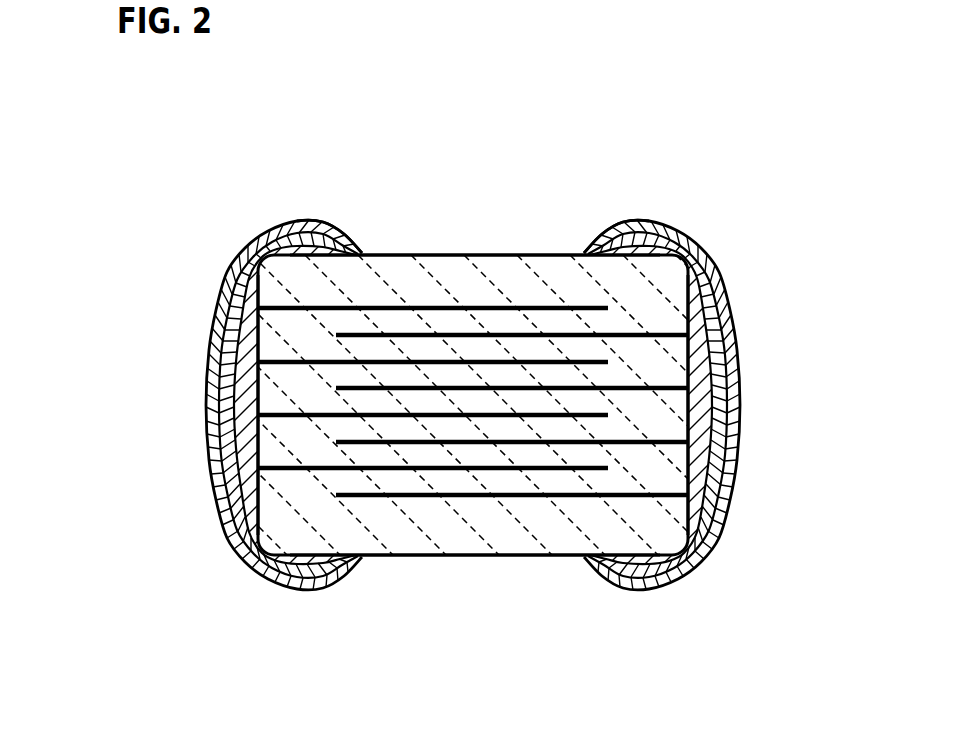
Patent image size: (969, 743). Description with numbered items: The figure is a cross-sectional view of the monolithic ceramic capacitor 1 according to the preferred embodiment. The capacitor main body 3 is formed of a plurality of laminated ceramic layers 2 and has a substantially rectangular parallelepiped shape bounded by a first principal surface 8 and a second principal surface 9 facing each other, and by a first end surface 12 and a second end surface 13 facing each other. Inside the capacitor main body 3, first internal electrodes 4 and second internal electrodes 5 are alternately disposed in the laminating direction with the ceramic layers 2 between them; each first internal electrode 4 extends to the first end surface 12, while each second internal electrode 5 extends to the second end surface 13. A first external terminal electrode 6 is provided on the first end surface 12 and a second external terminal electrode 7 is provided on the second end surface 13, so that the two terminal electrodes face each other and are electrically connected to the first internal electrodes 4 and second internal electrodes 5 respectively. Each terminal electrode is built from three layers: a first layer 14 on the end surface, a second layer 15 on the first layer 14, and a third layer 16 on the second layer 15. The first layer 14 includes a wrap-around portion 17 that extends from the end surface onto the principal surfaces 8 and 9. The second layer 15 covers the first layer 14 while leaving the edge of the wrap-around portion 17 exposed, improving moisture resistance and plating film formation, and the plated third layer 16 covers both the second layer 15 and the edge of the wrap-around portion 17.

The monolithic ceramic capacitor 1 is at (160, 149).
The ceramic layers 2 is at (450, 455).
The capacitor main body 3 is at (560, 244).
The first internal electrode 4 is at (450, 360).
The second internal electrode 5 is at (551, 448).
The first external terminal electrode 6 is at (100, 303).
The second external terminal electrode 7 is at (827, 283).
The first principal surface 8 is at (468, 255).
The second principal surface 9 is at (373, 557).
The first end surface 12 is at (247, 497).
The second end surface 13 is at (688, 467).
The first layer 14 is at (247, 323).
The second layer 15 is at (223, 380).
The third layer 16 is at (210, 428).
The wrap-around portion 17 is at (296, 250).